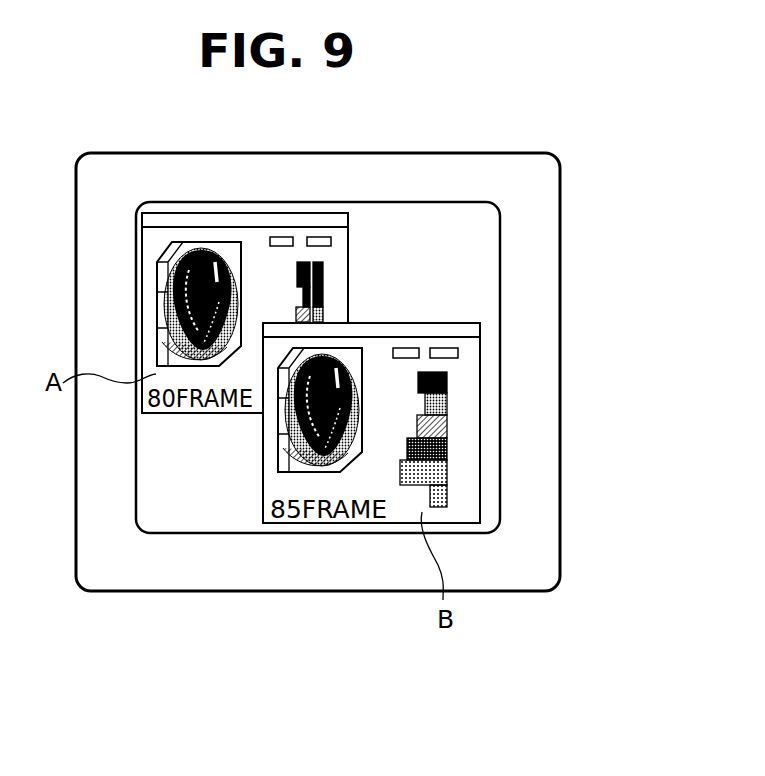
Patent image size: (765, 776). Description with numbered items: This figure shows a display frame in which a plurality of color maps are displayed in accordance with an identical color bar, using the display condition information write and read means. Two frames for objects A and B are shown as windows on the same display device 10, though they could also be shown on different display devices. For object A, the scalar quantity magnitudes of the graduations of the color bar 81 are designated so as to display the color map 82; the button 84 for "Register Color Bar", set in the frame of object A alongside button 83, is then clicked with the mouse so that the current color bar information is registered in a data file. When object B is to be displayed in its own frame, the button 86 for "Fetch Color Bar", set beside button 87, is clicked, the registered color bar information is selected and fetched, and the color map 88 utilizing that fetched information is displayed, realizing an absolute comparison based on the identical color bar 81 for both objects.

The display device 10 is at (545, 412).
The color bar 81 is at (323, 273).
The color map 82 is at (170, 257).
The icon button 83 is at (278, 237).
The button for "Register Color Bar" 84 is at (323, 237).
The button for "Fetch Color Bar" 86 is at (405, 346).
The icon button 87 is at (444, 346).
The color map 88 is at (281, 470).